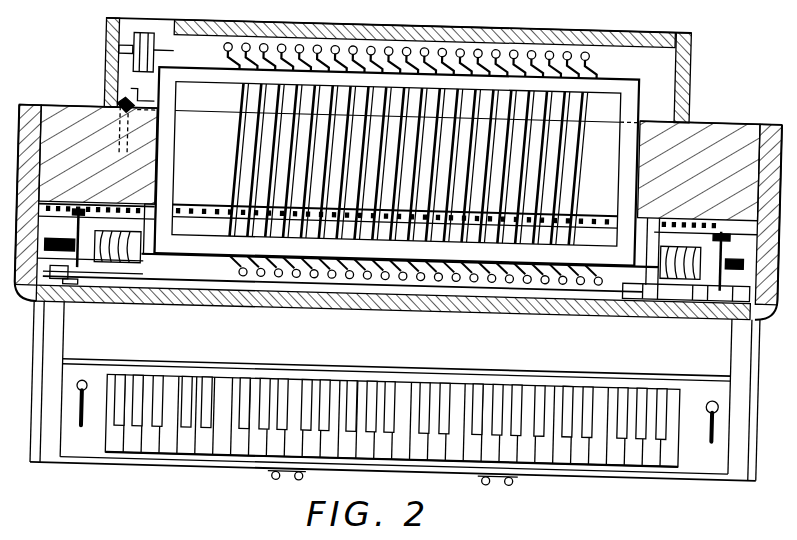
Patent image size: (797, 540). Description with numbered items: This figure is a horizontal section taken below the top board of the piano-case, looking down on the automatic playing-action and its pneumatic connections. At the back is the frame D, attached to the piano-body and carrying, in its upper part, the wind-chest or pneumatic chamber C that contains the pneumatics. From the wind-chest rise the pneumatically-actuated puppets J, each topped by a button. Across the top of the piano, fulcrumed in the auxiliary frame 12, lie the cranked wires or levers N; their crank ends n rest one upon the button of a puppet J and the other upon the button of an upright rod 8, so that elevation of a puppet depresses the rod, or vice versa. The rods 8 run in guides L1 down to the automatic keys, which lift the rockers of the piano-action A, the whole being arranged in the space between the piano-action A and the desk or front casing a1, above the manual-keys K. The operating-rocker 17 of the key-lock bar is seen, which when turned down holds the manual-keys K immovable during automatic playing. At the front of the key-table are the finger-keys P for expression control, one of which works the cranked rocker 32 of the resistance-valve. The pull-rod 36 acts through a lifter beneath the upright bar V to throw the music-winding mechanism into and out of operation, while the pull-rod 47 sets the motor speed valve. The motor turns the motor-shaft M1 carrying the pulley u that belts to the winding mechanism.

The pulley u is at (149, 31).
The motor-shaft M1 is at (128, 50).
The cranked rocker 32 is at (130, 92).
The upright bar V is at (118, 100).
The crank ends n is at (228, 44).
The auxiliary frame 12 is at (206, 72).
The cranked wires or levers N is at (256, 150).
The puppet J is at (586, 56).
The wind-chest or pneumatic chamber C is at (424, 52).
The frame D is at (690, 82).
The upright rods or operators 8 is at (404, 282).
The desk or front casing a1 is at (303, 301).
The piano-action A is at (123, 262).
The guides L1 is at (185, 272).
The operating-rocker 17 is at (623, 308).
The pull-rod 36 is at (80, 393).
The pull-rod 47 is at (708, 408).
The manual-keys K is at (441, 423).
The finger-keys P is at (393, 491).